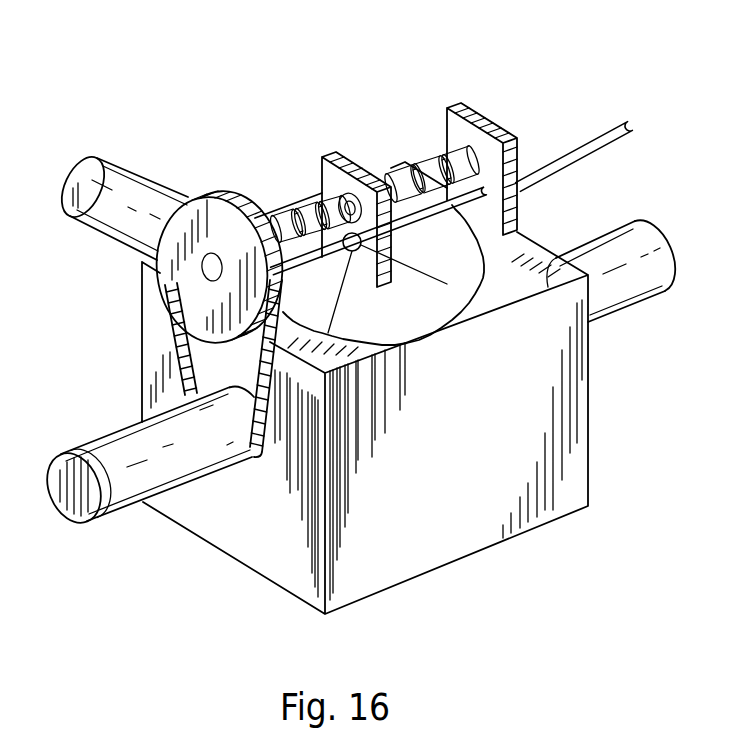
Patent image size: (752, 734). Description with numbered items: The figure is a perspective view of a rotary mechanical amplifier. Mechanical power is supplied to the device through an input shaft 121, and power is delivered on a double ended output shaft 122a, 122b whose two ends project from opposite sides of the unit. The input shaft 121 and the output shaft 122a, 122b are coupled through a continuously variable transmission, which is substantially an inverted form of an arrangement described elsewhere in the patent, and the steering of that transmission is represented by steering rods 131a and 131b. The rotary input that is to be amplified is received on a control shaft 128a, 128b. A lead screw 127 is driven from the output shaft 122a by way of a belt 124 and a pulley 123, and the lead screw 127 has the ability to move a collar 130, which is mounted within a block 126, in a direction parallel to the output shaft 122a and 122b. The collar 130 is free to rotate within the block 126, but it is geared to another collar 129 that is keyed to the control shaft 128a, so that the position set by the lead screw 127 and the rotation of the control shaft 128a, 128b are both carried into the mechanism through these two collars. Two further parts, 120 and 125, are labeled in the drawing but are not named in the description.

The base housing 120 is at (594, 455).
The input shaft 121 is at (108, 157).
The output shaft 122a is at (90, 433).
The output shaft 122b is at (666, 293).
The pulley 123 is at (188, 192).
The belt 124 is at (260, 459).
The support plate 125 is at (473, 105).
The block 126 is at (322, 155).
The lead screw 127 is at (418, 160).
The control shaft 128a is at (434, 217).
The control shaft 128b is at (584, 133).
The collar 129 is at (357, 254).
The collar 130 is at (330, 192).
The steering rod 131a is at (333, 327).
The steering rod 131b is at (447, 284).